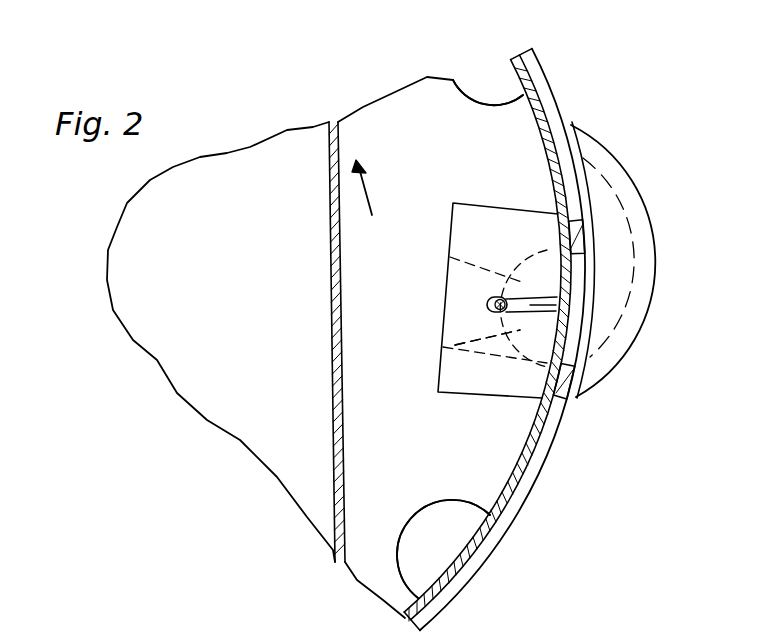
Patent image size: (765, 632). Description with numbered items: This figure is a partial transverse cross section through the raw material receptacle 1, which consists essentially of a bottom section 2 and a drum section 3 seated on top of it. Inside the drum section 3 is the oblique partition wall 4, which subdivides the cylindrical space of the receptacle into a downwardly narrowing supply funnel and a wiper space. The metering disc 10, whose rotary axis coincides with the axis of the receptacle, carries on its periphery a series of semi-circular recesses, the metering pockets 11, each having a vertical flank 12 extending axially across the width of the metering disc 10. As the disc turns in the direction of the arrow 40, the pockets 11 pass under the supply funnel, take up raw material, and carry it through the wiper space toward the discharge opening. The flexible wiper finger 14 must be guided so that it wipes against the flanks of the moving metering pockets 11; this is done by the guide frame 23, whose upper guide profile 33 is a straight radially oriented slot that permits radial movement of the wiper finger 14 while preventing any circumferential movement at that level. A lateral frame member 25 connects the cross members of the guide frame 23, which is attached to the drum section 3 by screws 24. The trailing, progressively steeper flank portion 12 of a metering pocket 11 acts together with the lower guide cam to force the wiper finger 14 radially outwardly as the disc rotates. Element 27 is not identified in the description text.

The raw material receptacle 1 is at (537, 493).
The bottom section 2 is at (642, 287).
The drum section 3 is at (533, 438).
The partition wall 4 is at (333, 275).
The metering disc 10 is at (387, 434).
The metering pockets 11 is at (482, 77).
The vertical flank 12 is at (486, 93).
The wiper finger 14 is at (490, 301).
The guide frame 23 is at (468, 204).
The screws 24 is at (578, 240).
The lateral frame member 25 is at (565, 385).
The plate portion 27 is at (463, 325).
The upper guide profile 33 is at (535, 312).
The arrow 40 is at (372, 198).